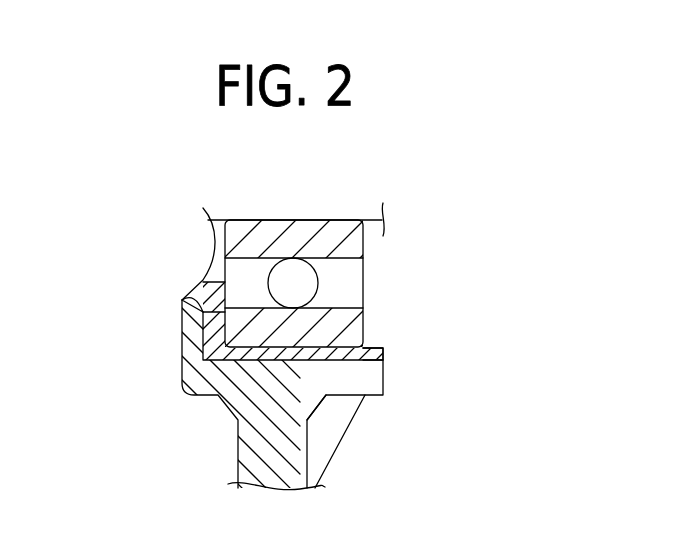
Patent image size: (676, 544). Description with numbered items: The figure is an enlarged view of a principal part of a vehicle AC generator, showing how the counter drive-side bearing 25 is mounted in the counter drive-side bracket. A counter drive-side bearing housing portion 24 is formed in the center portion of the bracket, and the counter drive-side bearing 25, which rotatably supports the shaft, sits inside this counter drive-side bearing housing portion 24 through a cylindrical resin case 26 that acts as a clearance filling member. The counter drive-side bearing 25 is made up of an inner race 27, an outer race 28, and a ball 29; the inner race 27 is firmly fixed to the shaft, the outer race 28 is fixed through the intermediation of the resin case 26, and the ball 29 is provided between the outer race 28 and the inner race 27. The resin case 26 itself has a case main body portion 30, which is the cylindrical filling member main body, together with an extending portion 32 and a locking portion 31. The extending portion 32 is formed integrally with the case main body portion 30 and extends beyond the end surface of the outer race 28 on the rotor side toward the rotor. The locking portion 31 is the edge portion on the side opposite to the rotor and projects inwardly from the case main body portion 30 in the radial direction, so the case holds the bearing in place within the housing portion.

The counter drive-side bearing housing portion 24 is at (252, 378).
The counter drive-side bearing 25 is at (382, 265).
The resin case 26 is at (182, 299).
The inner race 27 is at (342, 232).
The outer race 28 is at (253, 318).
The ball 29 is at (295, 272).
The case main body portion 30 is at (328, 400).
The locking portion 31 is at (215, 329).
The extending portion 32 is at (374, 352).